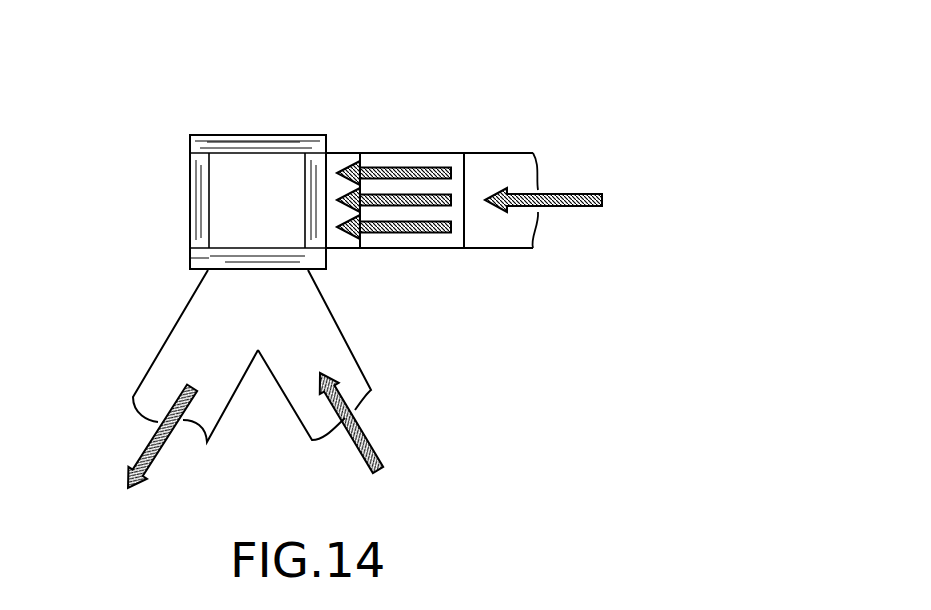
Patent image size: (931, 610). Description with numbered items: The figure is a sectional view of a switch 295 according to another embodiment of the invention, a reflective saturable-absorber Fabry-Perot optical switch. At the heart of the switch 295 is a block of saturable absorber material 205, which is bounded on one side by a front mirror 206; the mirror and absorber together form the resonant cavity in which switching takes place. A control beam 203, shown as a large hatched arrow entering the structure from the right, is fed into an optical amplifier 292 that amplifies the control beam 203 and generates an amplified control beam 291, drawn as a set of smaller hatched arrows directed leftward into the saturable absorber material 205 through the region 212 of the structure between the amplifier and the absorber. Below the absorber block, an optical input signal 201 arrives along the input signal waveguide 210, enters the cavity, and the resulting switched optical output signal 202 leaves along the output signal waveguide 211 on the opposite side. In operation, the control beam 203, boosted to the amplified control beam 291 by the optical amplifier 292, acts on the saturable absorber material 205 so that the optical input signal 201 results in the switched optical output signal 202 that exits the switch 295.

The optical input signal 201 is at (381, 453).
The switched optical output signal 202 is at (235, 143).
The control beam 203 is at (550, 213).
The saturable absorber material 205 is at (262, 181).
The front mirror 206 is at (194, 266).
The input signal waveguide 210 is at (371, 389).
The output signal waveguide 211 is at (199, 353).
The air duct 212 is at (512, 250).
The amplified control beam 291 is at (348, 157).
The optical amplifier 292 is at (438, 162).
The switch 295 is at (489, 179).